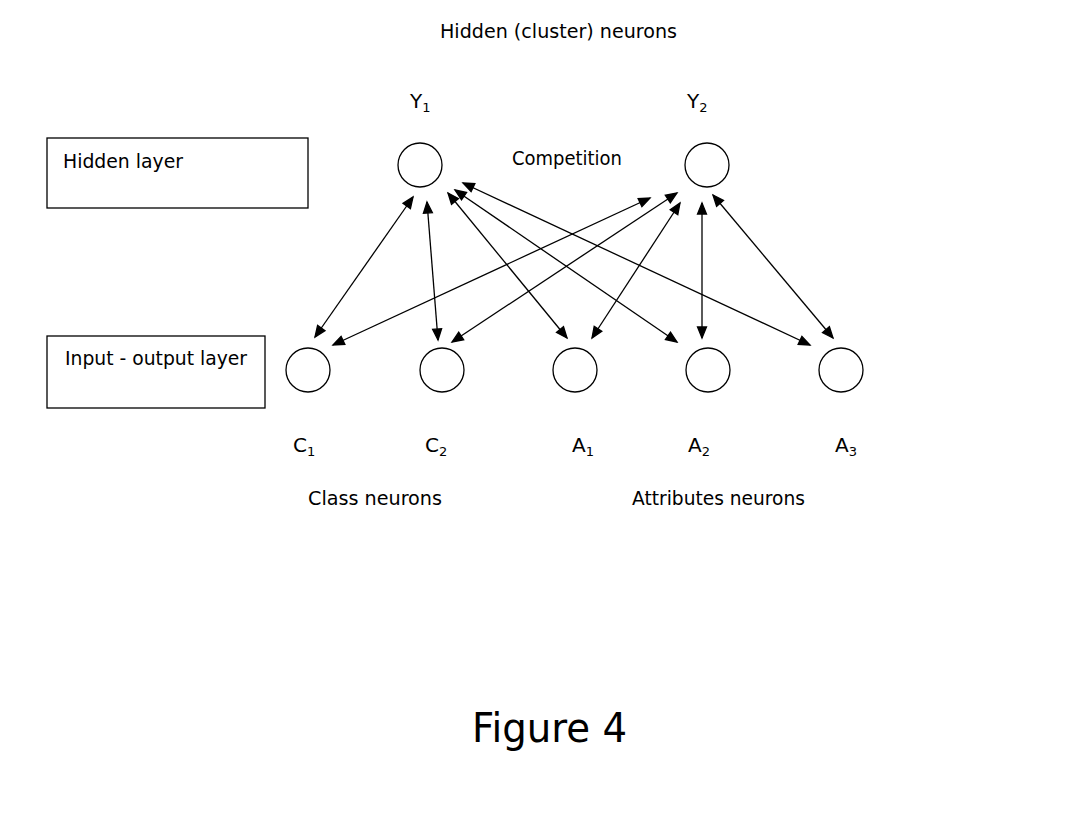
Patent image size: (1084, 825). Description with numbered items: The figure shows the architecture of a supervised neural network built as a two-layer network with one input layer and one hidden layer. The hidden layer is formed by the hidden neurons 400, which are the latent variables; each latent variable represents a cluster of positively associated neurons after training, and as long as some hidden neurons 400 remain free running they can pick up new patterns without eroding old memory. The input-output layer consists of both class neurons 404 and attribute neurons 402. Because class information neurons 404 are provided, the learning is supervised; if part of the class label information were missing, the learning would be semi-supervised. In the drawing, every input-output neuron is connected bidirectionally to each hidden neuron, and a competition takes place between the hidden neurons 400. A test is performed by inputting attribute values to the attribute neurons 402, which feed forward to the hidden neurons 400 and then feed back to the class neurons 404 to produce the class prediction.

The hidden neuron 400 is at (752, 166).
The attribute neuron 402 is at (892, 372).
The class neuron 404 is at (475, 388).